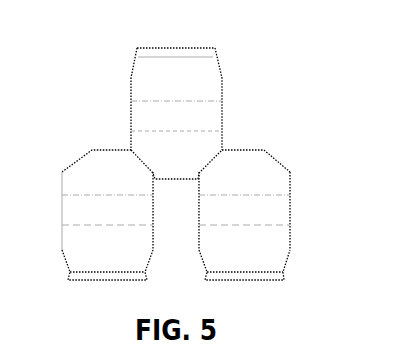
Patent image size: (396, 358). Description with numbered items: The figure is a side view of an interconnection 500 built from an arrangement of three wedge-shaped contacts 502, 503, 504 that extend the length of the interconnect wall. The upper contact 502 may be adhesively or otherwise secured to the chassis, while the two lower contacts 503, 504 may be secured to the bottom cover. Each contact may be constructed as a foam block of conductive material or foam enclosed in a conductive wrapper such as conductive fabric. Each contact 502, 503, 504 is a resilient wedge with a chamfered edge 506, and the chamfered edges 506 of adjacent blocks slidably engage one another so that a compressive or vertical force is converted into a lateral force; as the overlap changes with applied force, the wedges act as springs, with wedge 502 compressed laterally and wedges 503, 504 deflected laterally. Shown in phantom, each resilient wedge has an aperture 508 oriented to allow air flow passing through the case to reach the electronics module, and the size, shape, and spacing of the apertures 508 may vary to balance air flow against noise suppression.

The interconnection 500 is at (235, 40).
The contact 502 is at (132, 79).
The contact 503 is at (78, 160).
The contact 504 is at (292, 184).
The chamfered edge 506 is at (128, 150).
The aperture 508 is at (218, 110).